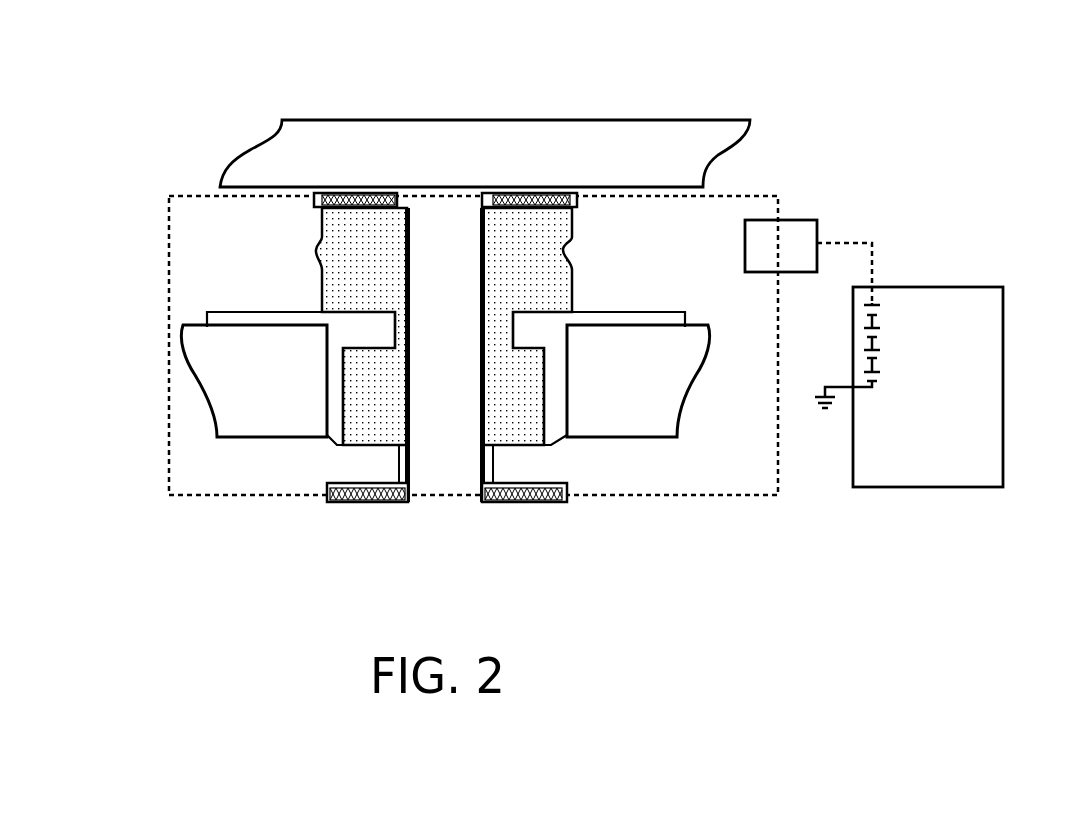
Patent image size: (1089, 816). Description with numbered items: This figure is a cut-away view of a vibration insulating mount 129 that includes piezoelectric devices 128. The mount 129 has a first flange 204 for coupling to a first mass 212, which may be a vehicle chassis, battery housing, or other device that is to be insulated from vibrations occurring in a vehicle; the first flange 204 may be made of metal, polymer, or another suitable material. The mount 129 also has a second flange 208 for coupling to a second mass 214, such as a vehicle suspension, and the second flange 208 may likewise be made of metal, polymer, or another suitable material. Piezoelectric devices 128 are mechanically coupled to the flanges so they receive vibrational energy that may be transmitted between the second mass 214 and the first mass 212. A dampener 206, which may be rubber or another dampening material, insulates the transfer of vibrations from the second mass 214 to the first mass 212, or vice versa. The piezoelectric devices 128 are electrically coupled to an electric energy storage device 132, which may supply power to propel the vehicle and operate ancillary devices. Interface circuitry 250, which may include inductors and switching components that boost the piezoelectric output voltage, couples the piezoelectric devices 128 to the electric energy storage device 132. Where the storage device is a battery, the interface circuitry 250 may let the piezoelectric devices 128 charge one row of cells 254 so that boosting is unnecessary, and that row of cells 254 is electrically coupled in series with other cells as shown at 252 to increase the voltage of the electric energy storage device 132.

The mount 129 is at (262, 88).
The first mass 212 is at (553, 120).
The piezoelectric devices 128 is at (350, 191).
The first flange 204 is at (316, 208).
The dampener 206 is at (567, 271).
The second flange 208 is at (637, 312).
The second mass 214 is at (273, 396).
The interface circuitry 250 is at (781, 246).
The series coupling of cells 252 is at (892, 284).
The row of cells 254 is at (867, 324).
The electric energy storage device 132 is at (928, 387).